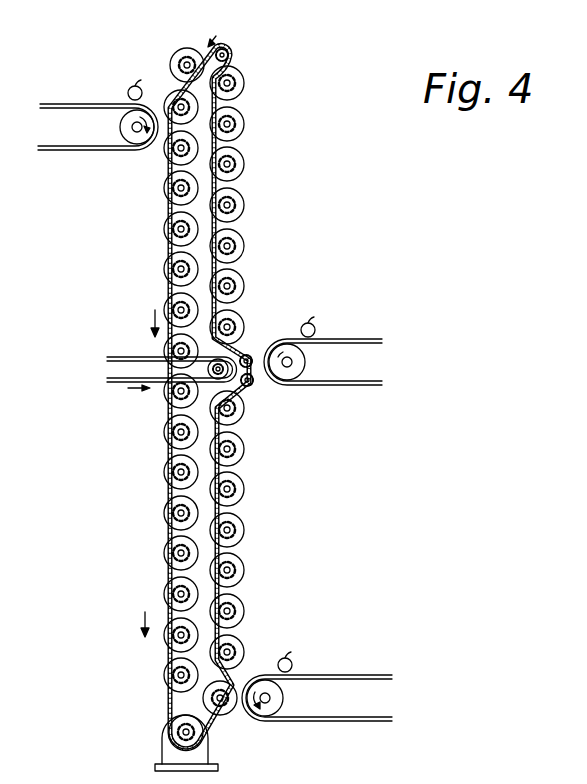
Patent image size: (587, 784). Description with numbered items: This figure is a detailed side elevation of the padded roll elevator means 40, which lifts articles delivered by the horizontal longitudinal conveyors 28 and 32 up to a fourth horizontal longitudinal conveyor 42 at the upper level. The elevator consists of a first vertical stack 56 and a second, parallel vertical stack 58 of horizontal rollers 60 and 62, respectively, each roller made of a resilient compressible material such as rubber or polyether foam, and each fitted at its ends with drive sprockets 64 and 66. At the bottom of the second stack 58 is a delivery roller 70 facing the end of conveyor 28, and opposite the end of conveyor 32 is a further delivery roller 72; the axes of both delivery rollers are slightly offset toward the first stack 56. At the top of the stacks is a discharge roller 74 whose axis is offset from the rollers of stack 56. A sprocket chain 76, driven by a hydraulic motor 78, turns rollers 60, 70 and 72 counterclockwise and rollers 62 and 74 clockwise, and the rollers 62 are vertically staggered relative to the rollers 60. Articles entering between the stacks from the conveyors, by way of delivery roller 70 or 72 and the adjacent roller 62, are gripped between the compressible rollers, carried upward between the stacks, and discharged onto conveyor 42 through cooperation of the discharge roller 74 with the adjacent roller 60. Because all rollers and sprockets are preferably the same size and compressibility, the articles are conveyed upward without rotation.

The horizontal longitudinal conveyor 28 is at (360, 675).
The horizontal longitudinal conveyor 32 is at (353, 386).
The padded roll elevator means 40 is at (250, 58).
The fourth horizontal longitudinal conveyor 42 is at (52, 103).
The first vertical stack 56 is at (160, 156).
The second vertical stack 58 is at (244, 101).
The horizontal rollers 60 is at (170, 97).
The horizontal rollers 62 is at (242, 155).
The drive sprockets 64 is at (178, 230).
The drive sprockets 66 is at (242, 240).
The delivery roller 70 is at (233, 718).
The further delivery roller 72 is at (248, 392).
The discharge roller 74 is at (190, 50).
The sprocket chain 76 is at (170, 655).
The hydraulic motor 78 is at (165, 753).